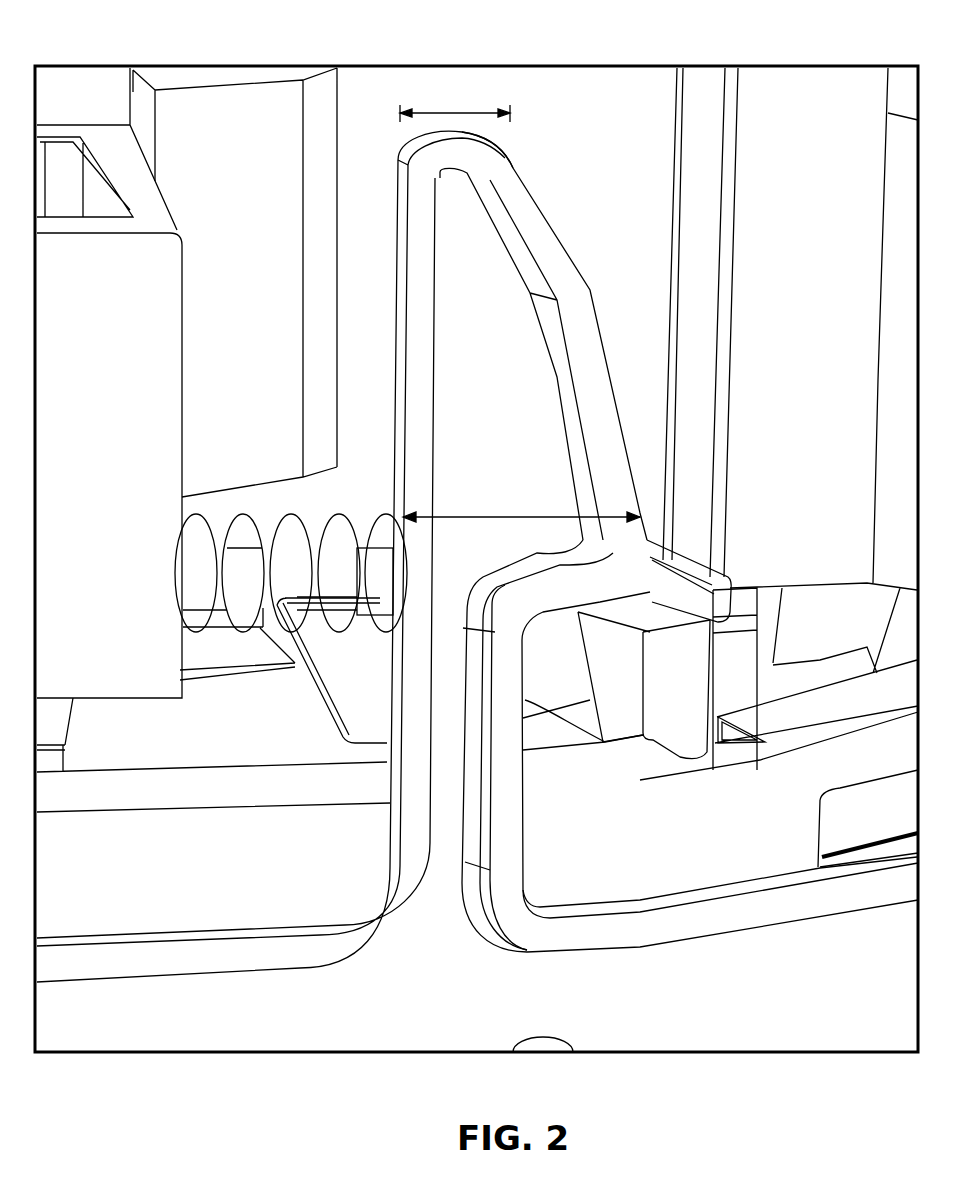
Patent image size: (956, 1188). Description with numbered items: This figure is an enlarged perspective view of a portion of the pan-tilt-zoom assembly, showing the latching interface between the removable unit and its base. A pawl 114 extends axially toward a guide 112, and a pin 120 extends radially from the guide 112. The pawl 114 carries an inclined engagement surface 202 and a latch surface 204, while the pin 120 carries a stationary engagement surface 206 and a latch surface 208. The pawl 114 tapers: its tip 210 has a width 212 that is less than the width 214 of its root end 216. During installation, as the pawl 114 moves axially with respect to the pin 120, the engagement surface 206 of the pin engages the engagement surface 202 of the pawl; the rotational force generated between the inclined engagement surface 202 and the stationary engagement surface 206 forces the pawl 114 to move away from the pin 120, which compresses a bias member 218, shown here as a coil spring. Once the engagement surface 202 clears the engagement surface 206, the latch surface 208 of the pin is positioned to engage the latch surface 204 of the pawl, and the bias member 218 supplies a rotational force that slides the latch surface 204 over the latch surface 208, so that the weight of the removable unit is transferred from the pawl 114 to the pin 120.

The guide 112 is at (617, 148).
The pawl 114 is at (520, 404).
The pin 120 is at (640, 658).
The engagement surface 202 is at (553, 220).
The latch surface 204 is at (650, 600).
The engagement surface 206 is at (590, 700).
The latch surface 208 is at (637, 585).
The tip 210 is at (513, 170).
The width 212 is at (467, 112).
The width 214 is at (490, 517).
The root end 216 is at (467, 605).
The bias member 218 is at (238, 510).